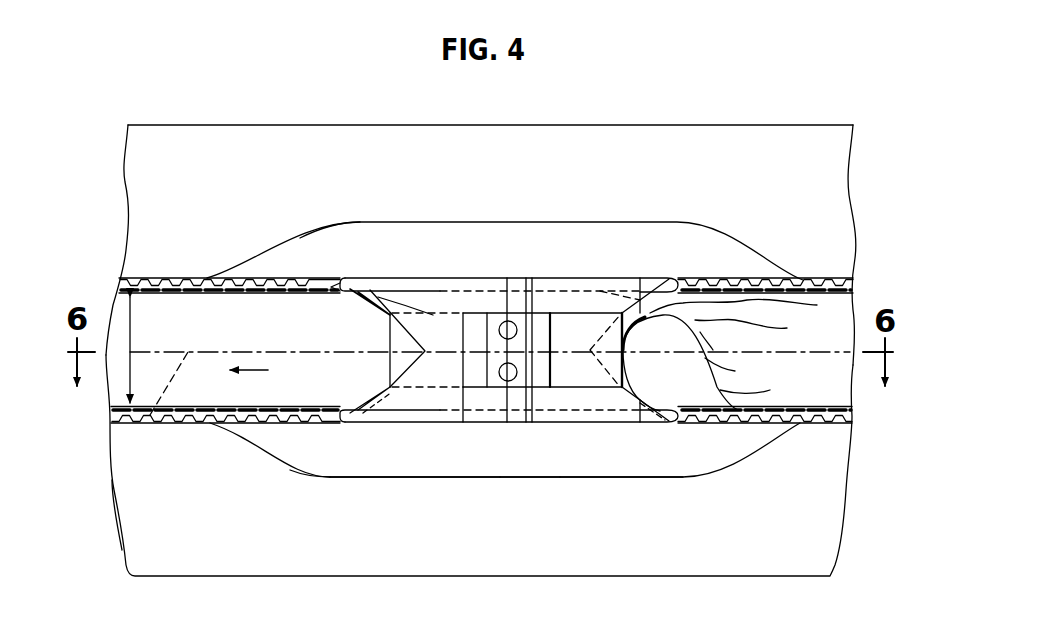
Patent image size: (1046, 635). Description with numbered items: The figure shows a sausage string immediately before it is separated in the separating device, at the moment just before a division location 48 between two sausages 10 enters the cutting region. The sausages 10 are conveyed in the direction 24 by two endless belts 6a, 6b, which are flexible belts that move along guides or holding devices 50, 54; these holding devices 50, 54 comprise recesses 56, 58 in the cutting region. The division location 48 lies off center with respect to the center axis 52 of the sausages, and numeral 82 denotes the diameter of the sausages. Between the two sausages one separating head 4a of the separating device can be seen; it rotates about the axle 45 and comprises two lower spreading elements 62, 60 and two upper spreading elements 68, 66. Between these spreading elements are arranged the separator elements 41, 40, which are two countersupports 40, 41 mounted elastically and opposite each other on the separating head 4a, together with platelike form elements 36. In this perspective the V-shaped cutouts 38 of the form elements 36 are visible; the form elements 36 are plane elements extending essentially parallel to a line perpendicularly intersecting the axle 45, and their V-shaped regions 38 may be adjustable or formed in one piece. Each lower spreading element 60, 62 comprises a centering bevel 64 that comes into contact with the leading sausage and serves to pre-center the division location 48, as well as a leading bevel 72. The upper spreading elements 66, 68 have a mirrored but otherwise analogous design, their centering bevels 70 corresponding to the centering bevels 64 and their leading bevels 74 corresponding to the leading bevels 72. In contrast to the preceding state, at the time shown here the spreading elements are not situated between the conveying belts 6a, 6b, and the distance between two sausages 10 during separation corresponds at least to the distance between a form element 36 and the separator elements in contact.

The sausages 10 is at (203, 313).
The direction 24 is at (217, 423).
The form elements 36 is at (437, 413).
The V-shaped cutouts 38 is at (458, 278).
The countersupport 40 is at (577, 278).
The countersupport 41 is at (398, 340).
The axle 45 is at (503, 278).
The division location 48 is at (682, 307).
The holding device 50 is at (787, 557).
The center axis 52 is at (145, 418).
The holding device 54 is at (175, 142).
The recess 56 is at (395, 230).
The recess 58 is at (580, 477).
The lower spreading element 60 is at (683, 437).
The lower spreading element 62 is at (357, 435).
The centering bevel 64 is at (403, 423).
The upper spreading element 66 is at (625, 264).
The upper spreading element 68 is at (333, 257).
The centering bevels 70 is at (413, 338).
The leading bevels 72 is at (468, 427).
The leading bevels 74 is at (377, 277).
The diameter 82 is at (129, 350).
The separating head 4a is at (535, 530).
The endless belt 6a is at (267, 313).
The endless belt 6b is at (280, 427).